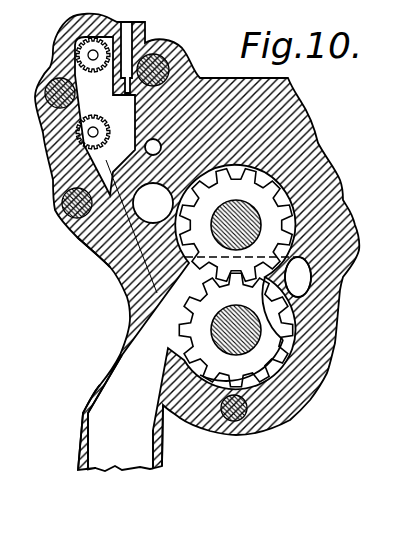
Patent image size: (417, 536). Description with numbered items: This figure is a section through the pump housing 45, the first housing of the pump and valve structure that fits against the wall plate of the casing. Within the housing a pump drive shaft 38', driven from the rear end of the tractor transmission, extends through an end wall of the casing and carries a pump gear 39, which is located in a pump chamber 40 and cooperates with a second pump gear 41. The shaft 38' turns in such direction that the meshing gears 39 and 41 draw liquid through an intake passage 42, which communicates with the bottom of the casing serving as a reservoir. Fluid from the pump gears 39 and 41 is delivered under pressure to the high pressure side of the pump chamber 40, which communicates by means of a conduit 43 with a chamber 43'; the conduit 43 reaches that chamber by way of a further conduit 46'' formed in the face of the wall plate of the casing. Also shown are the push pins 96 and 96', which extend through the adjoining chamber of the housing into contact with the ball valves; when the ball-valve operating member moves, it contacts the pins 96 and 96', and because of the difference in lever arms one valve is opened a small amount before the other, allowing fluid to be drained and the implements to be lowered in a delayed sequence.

The pump housing 45 is at (318, 140).
The push pin 96 is at (64, 51).
The push pin 96' is at (62, 155).
The pump gear 41 is at (282, 207).
The pump gear 39 is at (273, 335).
The conduit 43 is at (342, 277).
The chamber 43' is at (77, 260).
The conduit 46'' is at (177, 289).
The pump drive shaft 38' is at (318, 338).
The pump chamber 40 is at (258, 388).
The intake passage 42 is at (125, 458).